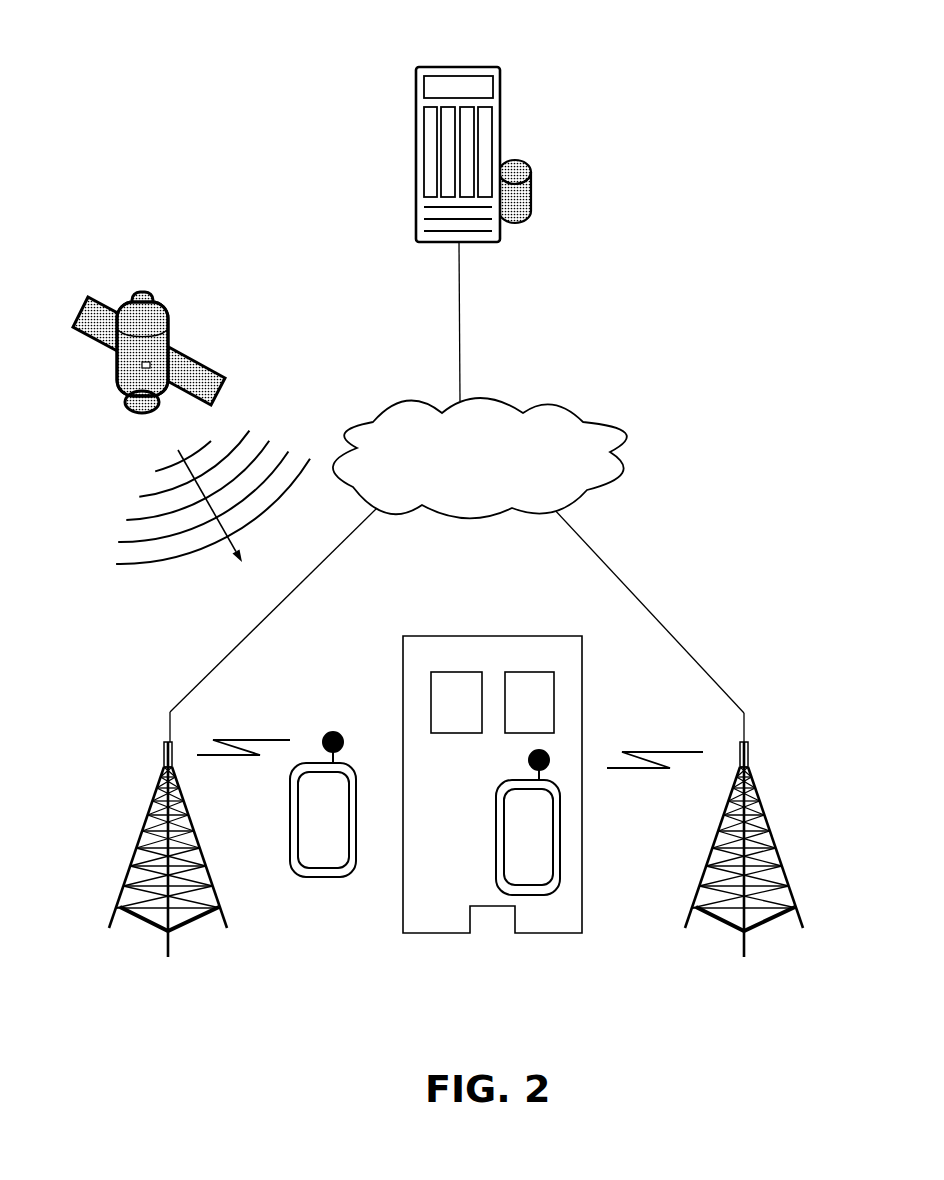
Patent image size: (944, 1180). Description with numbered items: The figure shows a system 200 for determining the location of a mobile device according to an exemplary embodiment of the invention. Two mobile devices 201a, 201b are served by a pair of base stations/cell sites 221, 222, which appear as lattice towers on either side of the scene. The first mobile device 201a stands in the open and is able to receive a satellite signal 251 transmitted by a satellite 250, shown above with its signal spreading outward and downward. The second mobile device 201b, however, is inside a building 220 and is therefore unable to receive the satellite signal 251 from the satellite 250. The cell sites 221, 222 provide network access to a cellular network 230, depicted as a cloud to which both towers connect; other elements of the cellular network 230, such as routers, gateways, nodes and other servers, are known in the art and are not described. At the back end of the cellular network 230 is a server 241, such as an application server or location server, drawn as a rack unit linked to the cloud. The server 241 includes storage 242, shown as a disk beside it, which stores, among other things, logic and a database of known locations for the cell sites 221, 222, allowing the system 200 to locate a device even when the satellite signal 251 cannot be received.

The system 200 is at (212, 132).
The mobile device 201a is at (274, 863).
The mobile device 201b is at (484, 879).
The building 220 is at (467, 754).
The base station/cell site 221 is at (141, 841).
The base station/cell site 222 is at (775, 827).
The cellular network 230 is at (480, 458).
The server 241 is at (509, 124).
The storage 242 is at (584, 166).
The satellite 250 is at (191, 338).
The satellite signal 251 is at (238, 465).